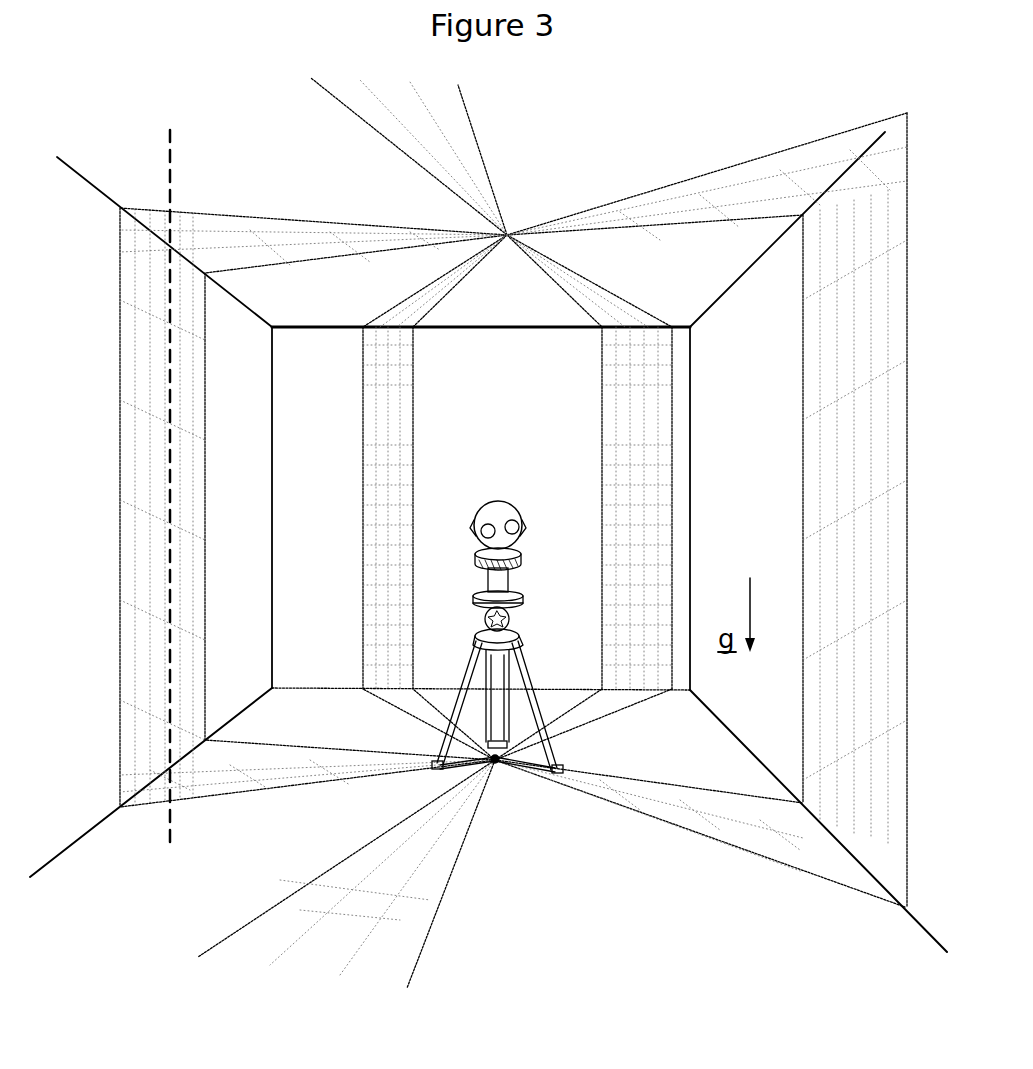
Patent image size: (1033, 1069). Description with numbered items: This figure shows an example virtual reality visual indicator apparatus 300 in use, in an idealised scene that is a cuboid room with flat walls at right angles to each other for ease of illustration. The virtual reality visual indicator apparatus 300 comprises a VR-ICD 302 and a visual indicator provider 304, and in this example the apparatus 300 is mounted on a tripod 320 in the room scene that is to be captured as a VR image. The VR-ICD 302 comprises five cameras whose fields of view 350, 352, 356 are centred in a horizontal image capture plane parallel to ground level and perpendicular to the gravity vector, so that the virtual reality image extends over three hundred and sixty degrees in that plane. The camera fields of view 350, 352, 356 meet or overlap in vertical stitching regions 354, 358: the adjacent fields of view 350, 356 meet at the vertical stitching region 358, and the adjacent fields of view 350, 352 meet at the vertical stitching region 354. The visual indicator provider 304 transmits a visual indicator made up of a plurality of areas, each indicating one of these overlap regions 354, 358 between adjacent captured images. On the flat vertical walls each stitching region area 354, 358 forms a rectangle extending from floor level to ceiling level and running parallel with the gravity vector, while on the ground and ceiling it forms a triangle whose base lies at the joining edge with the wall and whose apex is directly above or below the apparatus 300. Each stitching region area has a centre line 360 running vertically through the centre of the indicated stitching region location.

The virtual reality visual indicator apparatus 300 is at (493, 534).
The VR-ICD 302 is at (481, 514).
The visual indicator provider 304 is at (477, 563).
The tripod 320 is at (462, 668).
The field of view 350 is at (534, 414).
The field of view 352 is at (769, 437).
The vertical stitching region 354 is at (657, 427).
The field of view 356 is at (333, 441).
The vertical stitching region 358 is at (411, 426).
The centre line 360 is at (172, 175).